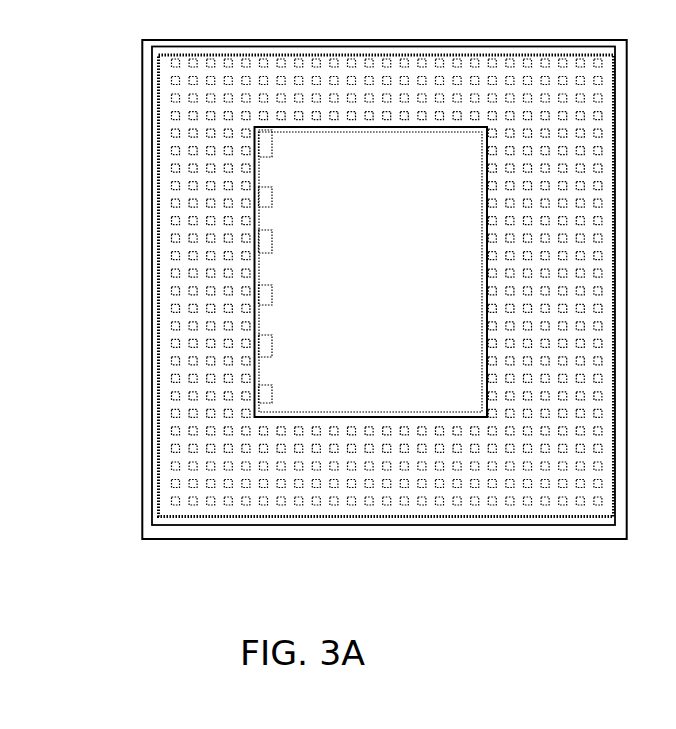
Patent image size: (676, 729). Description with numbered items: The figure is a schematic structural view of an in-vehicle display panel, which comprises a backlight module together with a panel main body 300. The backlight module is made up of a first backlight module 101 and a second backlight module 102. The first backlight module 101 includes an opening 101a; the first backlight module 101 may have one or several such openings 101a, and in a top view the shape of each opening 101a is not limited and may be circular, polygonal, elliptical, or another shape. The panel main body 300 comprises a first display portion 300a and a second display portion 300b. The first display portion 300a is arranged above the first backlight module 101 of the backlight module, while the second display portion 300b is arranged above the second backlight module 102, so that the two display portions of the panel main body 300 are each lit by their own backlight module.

The first backlight module 101 is at (168, 109).
The opening 101a is at (370, 127).
The second backlight module 102 is at (275, 212).
The panel main body 300 is at (308, 259).
The first display portion 300a is at (160, 278).
The second display portion 300b is at (257, 383).